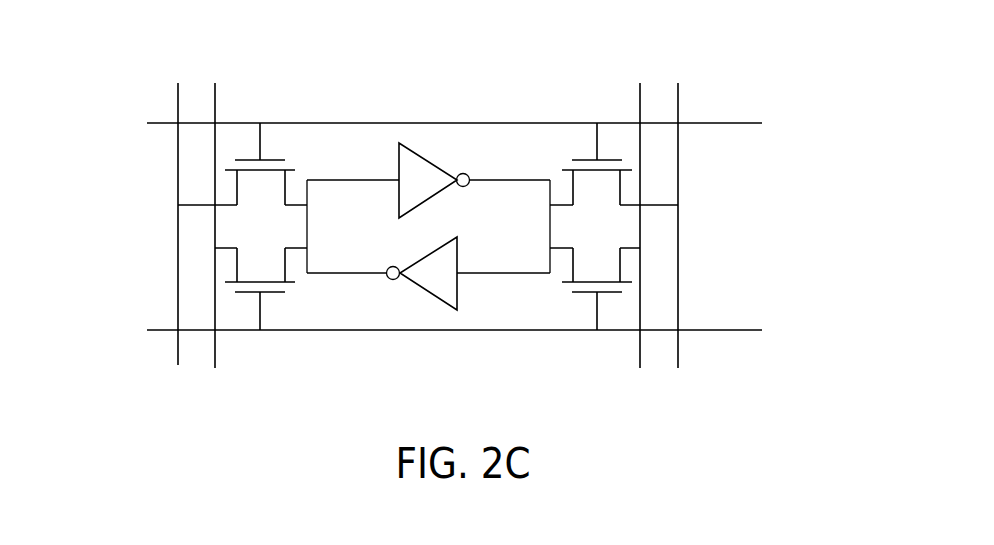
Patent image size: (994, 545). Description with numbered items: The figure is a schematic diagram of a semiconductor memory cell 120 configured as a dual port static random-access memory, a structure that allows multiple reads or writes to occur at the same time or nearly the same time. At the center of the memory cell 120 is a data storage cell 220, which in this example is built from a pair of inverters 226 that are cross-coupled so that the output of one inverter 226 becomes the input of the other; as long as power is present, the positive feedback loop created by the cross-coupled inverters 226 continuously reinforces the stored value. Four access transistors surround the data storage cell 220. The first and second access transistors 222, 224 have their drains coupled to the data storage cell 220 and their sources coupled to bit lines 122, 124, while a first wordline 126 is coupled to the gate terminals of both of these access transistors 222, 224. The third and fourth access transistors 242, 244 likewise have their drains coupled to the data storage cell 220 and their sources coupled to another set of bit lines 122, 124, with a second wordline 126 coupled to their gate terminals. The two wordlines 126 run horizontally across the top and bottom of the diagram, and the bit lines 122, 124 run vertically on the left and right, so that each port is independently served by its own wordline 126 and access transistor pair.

The memory cell 120 is at (314, 357).
The bit line 122 is at (178, 150).
The bit line 124 is at (678, 172).
The wordline 126 is at (737, 123).
The data storage cell 220 is at (503, 160).
The first access transistor 222 is at (292, 154).
The second access transistor 224 is at (581, 146).
The inverter 226 is at (414, 174).
The third access transistor 242 is at (242, 311).
The fourth access transistor 244 is at (570, 298).